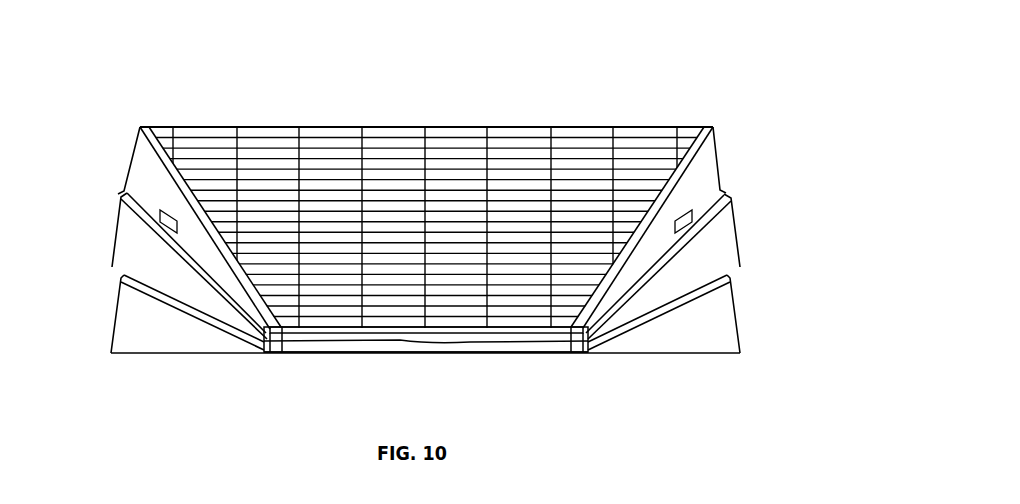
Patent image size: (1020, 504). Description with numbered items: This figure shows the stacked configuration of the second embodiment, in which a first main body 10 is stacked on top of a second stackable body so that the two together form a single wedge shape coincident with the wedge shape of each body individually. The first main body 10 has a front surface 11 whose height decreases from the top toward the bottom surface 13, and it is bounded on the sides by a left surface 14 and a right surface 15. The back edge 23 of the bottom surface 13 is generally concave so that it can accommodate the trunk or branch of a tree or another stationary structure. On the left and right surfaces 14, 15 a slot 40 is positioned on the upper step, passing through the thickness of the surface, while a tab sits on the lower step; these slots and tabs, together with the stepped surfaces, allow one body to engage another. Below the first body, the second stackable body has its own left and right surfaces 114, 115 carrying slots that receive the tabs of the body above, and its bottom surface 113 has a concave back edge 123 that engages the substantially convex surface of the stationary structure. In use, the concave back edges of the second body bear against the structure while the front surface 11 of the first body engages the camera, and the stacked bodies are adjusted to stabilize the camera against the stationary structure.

The main body 10 is at (741, 120).
The front surface 11 is at (513, 172).
The bottom surface 13 is at (553, 330).
The left surface 14 is at (122, 236).
The right surface 15 is at (721, 235).
The back edge 23 is at (372, 332).
The slot 40 is at (162, 222).
The bottom surface 113 is at (533, 350).
The left surface 114 is at (168, 332).
The right surface 115 is at (672, 333).
The concave back edge 123 is at (396, 344).